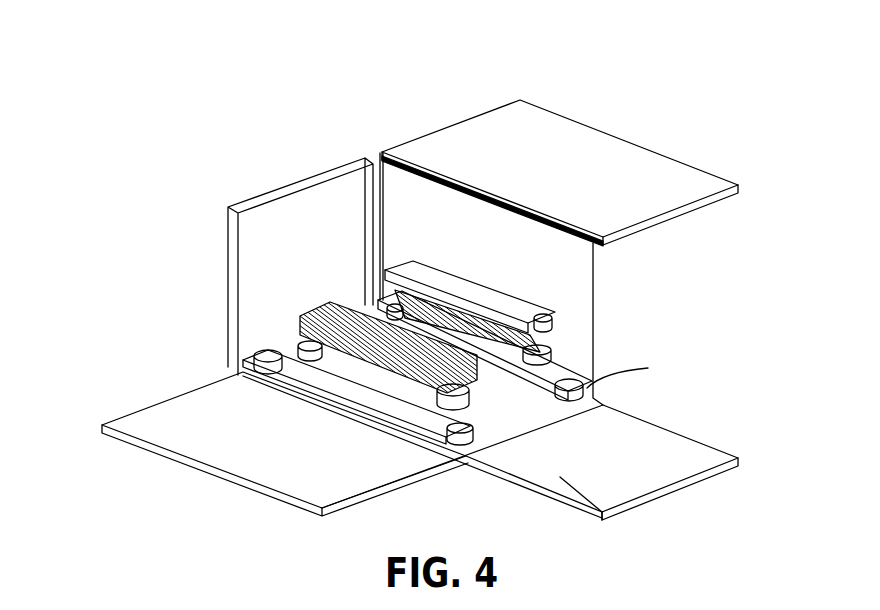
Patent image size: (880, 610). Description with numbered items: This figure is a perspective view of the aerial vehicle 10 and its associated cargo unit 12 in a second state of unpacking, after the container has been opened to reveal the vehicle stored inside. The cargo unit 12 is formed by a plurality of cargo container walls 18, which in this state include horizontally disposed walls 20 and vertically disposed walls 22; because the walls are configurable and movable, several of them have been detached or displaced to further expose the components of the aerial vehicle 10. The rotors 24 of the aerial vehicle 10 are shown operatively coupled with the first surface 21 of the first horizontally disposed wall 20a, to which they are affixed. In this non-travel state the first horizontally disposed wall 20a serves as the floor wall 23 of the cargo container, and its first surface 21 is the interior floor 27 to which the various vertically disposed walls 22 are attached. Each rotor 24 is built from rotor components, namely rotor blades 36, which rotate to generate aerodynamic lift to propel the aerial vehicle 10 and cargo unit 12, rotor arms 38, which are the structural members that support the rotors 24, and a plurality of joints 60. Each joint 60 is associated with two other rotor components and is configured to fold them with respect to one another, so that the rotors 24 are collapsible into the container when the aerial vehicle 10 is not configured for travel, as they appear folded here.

The aerial vehicle 10 is at (689, 56).
The cargo unit 12 is at (600, 82).
The cargo container walls 18 is at (415, 331).
The horizontally disposed walls 20 is at (647, 193).
The vertically disposed walls 22 is at (318, 211).
The first horizontally disposed wall 20a is at (640, 484).
The floor wall 23 is at (513, 407).
The first surface 21 is at (683, 502).
The interior floor 27 is at (560, 477).
The rotors 24 is at (468, 288).
The rotor blades 36 is at (512, 293).
The rotor arms 38 is at (410, 403).
The joints 60 is at (548, 308).